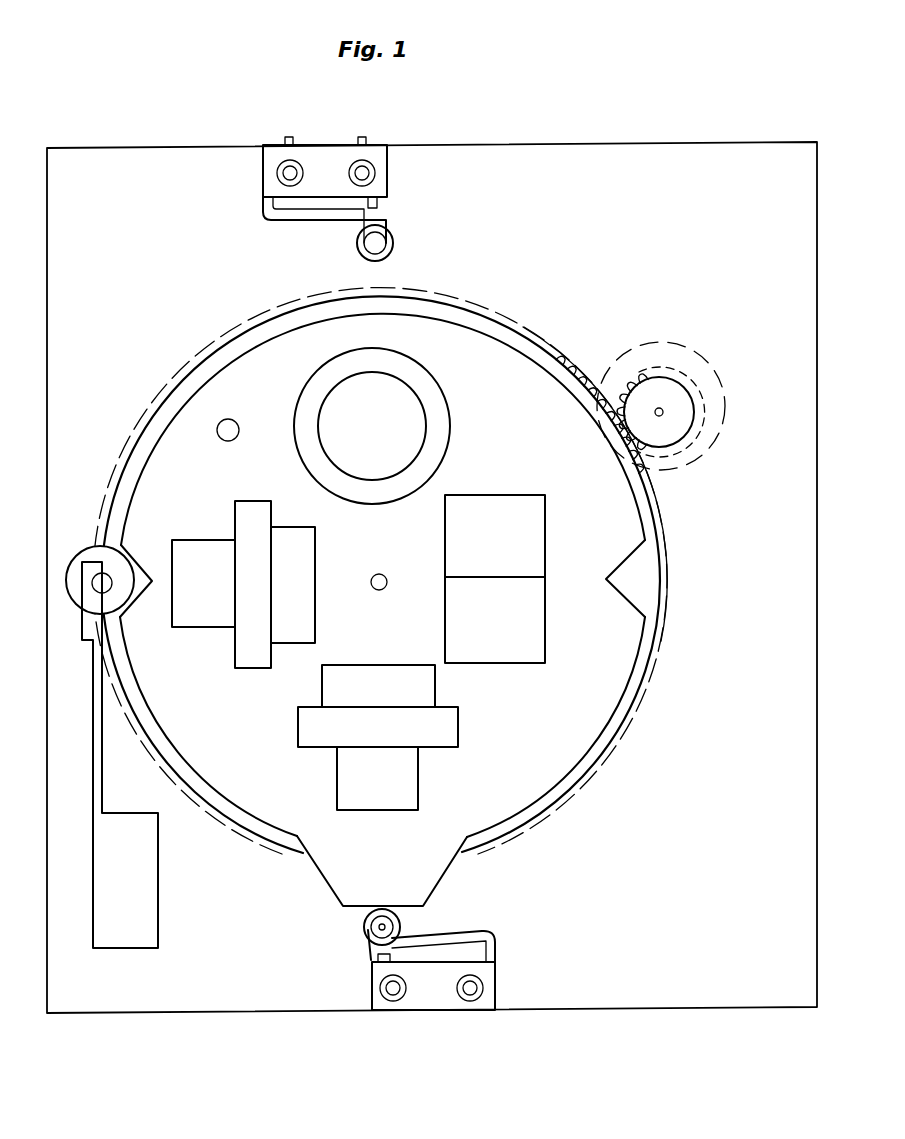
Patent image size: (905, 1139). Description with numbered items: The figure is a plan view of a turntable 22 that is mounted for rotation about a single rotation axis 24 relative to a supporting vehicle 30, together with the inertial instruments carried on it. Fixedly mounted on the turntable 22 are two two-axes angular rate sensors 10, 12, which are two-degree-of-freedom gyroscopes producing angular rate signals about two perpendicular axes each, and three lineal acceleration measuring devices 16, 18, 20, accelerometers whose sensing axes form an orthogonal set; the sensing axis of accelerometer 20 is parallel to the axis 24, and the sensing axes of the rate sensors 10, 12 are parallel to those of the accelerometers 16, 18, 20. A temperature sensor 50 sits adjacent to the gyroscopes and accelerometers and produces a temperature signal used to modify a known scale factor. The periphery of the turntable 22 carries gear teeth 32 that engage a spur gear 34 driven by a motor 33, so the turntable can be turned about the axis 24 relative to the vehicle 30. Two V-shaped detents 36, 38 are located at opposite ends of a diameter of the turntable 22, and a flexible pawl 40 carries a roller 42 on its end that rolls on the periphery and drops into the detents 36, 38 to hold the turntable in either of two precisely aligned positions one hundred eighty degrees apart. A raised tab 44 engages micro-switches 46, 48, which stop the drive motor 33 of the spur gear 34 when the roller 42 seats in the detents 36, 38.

The two-axes angular rate sensor 10 is at (530, 493).
The two-axes angular rate sensor 12 is at (531, 665).
The lineal acceleration measuring device 16 is at (317, 595).
The lineal acceleration measuring device 18 is at (377, 663).
The lineal acceleration measuring device 20 is at (452, 435).
The turntable 22 is at (572, 752).
The rotation axis 24 is at (385, 575).
The supporting vehicle 30 is at (672, 917).
The gear teeth 32 is at (571, 363).
The motor 33 is at (712, 360).
The spur gear 34 is at (683, 437).
The detent 36 is at (132, 600).
The detent 38 is at (617, 566).
The flexible pawl 40 is at (103, 775).
The roller 42 is at (93, 548).
The raised tab 44 is at (327, 887).
The micro-switch 46 is at (497, 975).
The micro-switch 48 is at (388, 220).
The temperature sensor 50 is at (220, 439).